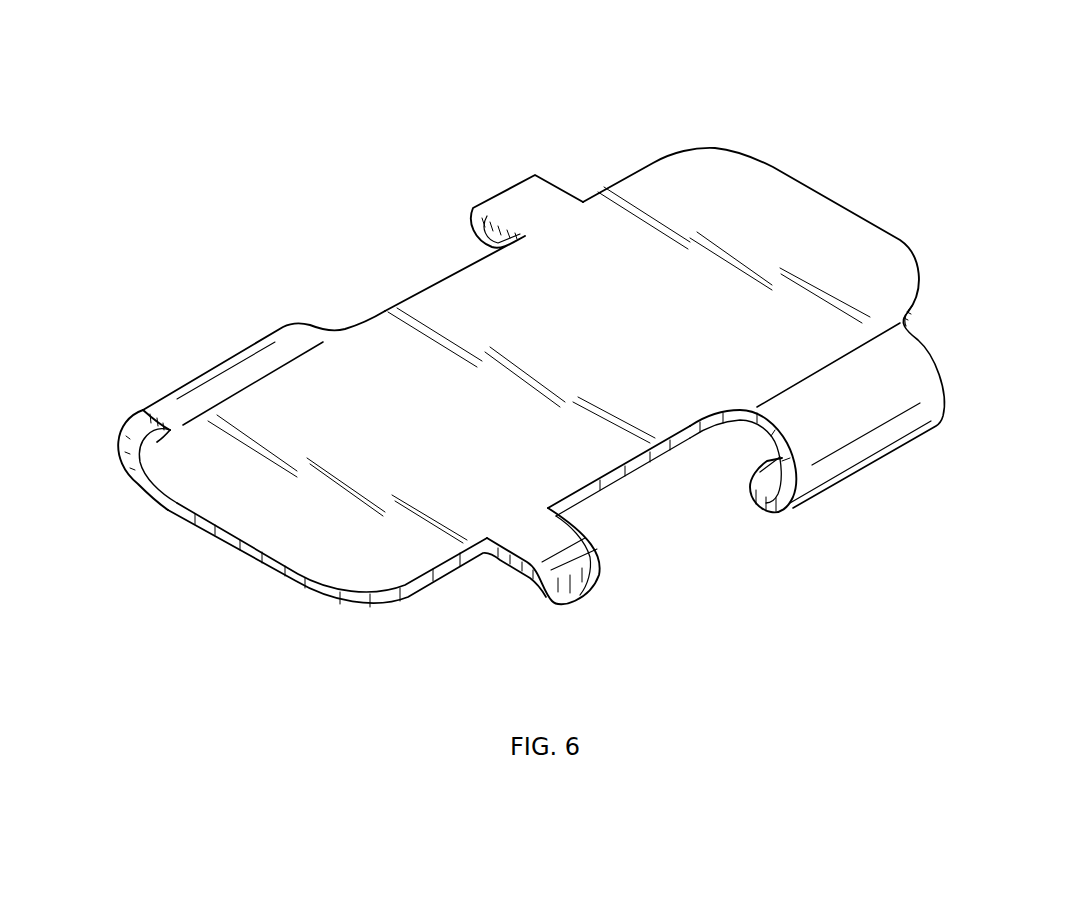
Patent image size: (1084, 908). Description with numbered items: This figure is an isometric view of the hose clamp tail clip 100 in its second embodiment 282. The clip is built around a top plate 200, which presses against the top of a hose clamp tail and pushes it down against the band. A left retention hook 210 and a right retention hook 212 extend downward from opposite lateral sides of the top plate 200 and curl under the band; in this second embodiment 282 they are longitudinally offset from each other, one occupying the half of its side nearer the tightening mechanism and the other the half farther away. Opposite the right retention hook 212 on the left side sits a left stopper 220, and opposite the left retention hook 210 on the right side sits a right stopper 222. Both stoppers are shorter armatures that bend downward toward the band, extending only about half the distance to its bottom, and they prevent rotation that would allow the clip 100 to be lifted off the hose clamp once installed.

The hose clamp tail clip 100 is at (502, 342).
The second embodiment 282 is at (502, 342).
The top plate 200 is at (748, 178).
The left retention hook 210 is at (900, 432).
The right retention hook 212 is at (135, 422).
The left stopper 220 is at (581, 577).
The right stopper 222 is at (499, 193).